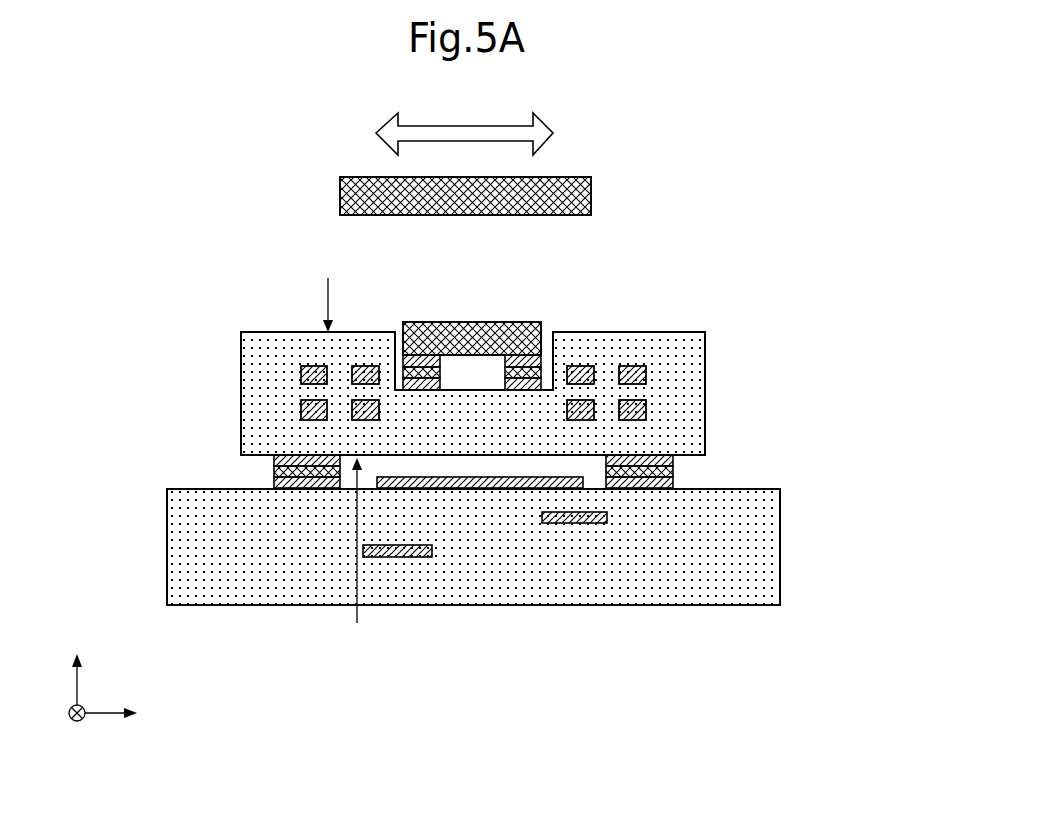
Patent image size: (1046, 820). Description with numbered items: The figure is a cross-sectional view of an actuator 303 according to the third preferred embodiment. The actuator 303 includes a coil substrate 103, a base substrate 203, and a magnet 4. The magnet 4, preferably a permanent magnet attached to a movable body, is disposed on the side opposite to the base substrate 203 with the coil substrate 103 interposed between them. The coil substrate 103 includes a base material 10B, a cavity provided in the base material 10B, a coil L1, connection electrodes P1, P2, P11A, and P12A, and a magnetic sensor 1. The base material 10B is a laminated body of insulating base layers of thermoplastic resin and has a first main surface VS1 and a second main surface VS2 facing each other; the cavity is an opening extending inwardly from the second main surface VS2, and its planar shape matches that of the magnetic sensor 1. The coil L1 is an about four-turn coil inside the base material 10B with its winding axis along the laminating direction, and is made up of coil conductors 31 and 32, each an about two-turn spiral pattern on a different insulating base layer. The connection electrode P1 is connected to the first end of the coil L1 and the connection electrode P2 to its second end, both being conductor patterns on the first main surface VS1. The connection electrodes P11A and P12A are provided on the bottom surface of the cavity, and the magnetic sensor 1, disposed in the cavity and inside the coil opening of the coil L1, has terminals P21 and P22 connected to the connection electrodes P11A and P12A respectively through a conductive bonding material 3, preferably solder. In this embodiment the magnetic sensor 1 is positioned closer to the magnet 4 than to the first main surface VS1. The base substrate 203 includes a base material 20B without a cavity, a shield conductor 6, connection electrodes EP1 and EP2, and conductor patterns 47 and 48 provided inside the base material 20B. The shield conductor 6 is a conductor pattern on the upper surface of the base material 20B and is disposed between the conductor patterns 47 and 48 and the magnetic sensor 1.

The actuator 303 is at (772, 103).
The magnet 4 is at (591, 177).
The coil substrate 103 is at (645, 311).
The base material 10B is at (705, 332).
The coil L1 is at (290, 255).
The coil conductor 31 is at (297, 410).
The coil conductor 32 is at (300, 375).
The second main surface VS2 is at (329, 289).
The conductive bonding material 3 is at (403, 372).
The terminal P21 is at (422, 360).
The terminal P22 is at (522, 360).
The magnetic sensor 1 is at (541, 322).
The connection electrode P1 is at (290, 455).
The connection electrode P2 is at (662, 453).
The base material 20B is at (780, 488).
The connection electrode EP1 is at (290, 490).
The connection electrode EP2 is at (658, 490).
The first main surface VS1 is at (351, 556).
The connection electrode P11A is at (421, 390).
The connection electrode P12A is at (521, 390).
The conductor pattern 47 is at (400, 557).
The shield conductor 6 is at (483, 488).
The conductor pattern 48 is at (573, 523).
The base substrate 203 is at (746, 620).